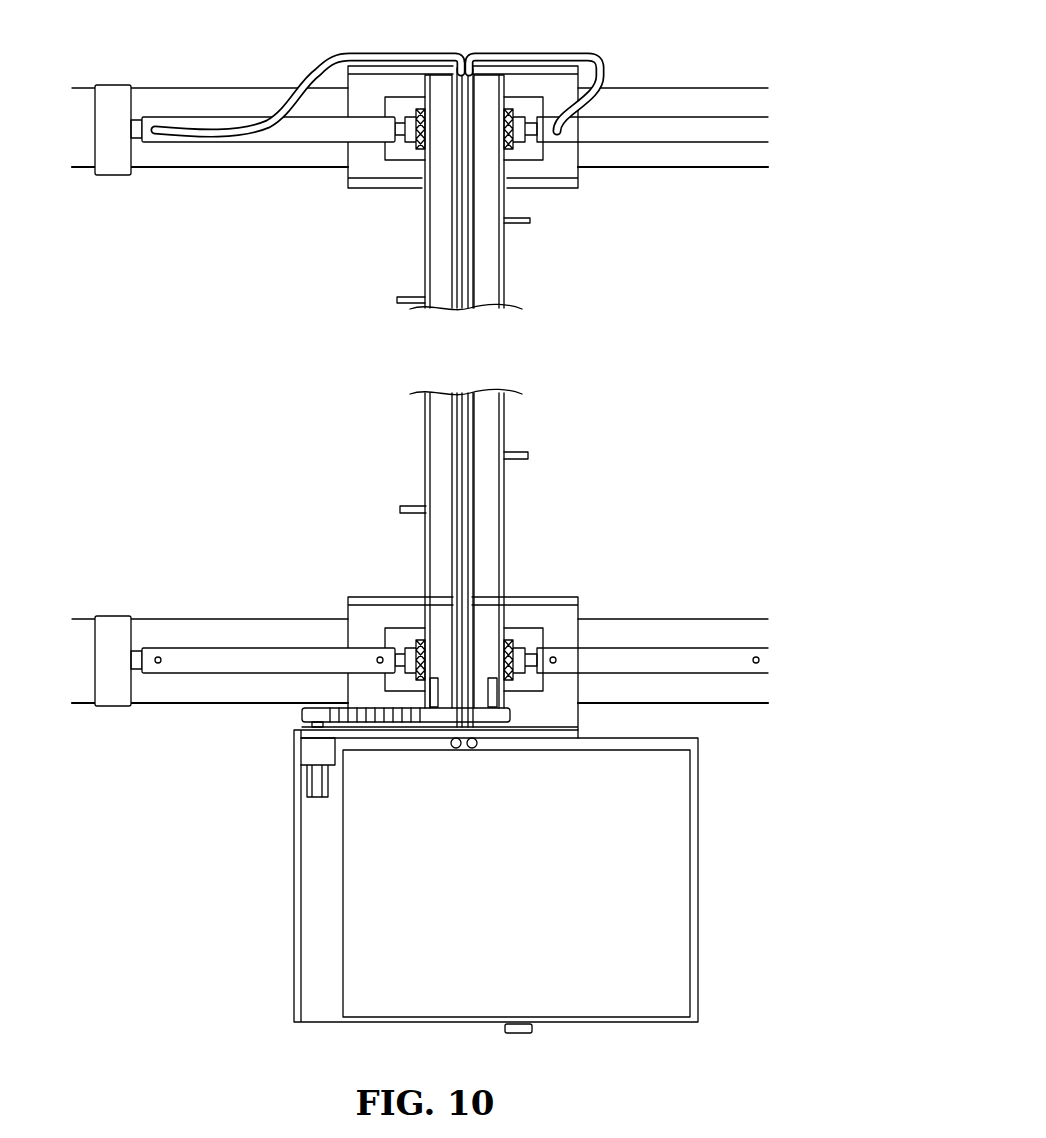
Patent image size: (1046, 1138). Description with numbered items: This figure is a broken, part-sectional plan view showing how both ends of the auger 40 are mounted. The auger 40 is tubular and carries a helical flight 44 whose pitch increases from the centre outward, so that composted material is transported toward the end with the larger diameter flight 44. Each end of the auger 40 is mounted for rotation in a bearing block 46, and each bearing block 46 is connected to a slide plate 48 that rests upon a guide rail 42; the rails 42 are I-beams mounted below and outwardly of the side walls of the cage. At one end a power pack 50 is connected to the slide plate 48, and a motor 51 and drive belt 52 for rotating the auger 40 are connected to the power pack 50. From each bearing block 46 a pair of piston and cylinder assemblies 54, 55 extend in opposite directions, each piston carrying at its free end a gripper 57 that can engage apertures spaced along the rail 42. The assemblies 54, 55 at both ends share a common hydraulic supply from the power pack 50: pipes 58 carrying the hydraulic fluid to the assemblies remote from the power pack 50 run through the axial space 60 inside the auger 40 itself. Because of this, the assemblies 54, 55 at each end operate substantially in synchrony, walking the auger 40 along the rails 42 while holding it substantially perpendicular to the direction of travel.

The auger 40 is at (430, 413).
The guide rail 42 is at (188, 153).
The flight 44 is at (387, 293).
The bearing block 46 is at (527, 152).
The slide plate 48 is at (567, 168).
The power pack 50 is at (500, 894).
The motor 51 is at (328, 830).
The drive belt 52 is at (390, 713).
The piston and cylinder assembly 54 is at (650, 128).
The piston and cylinder assembly 55 is at (308, 130).
The gripper 57 is at (110, 100).
The pipes 58 is at (313, 77).
The axial space 60 is at (487, 433).